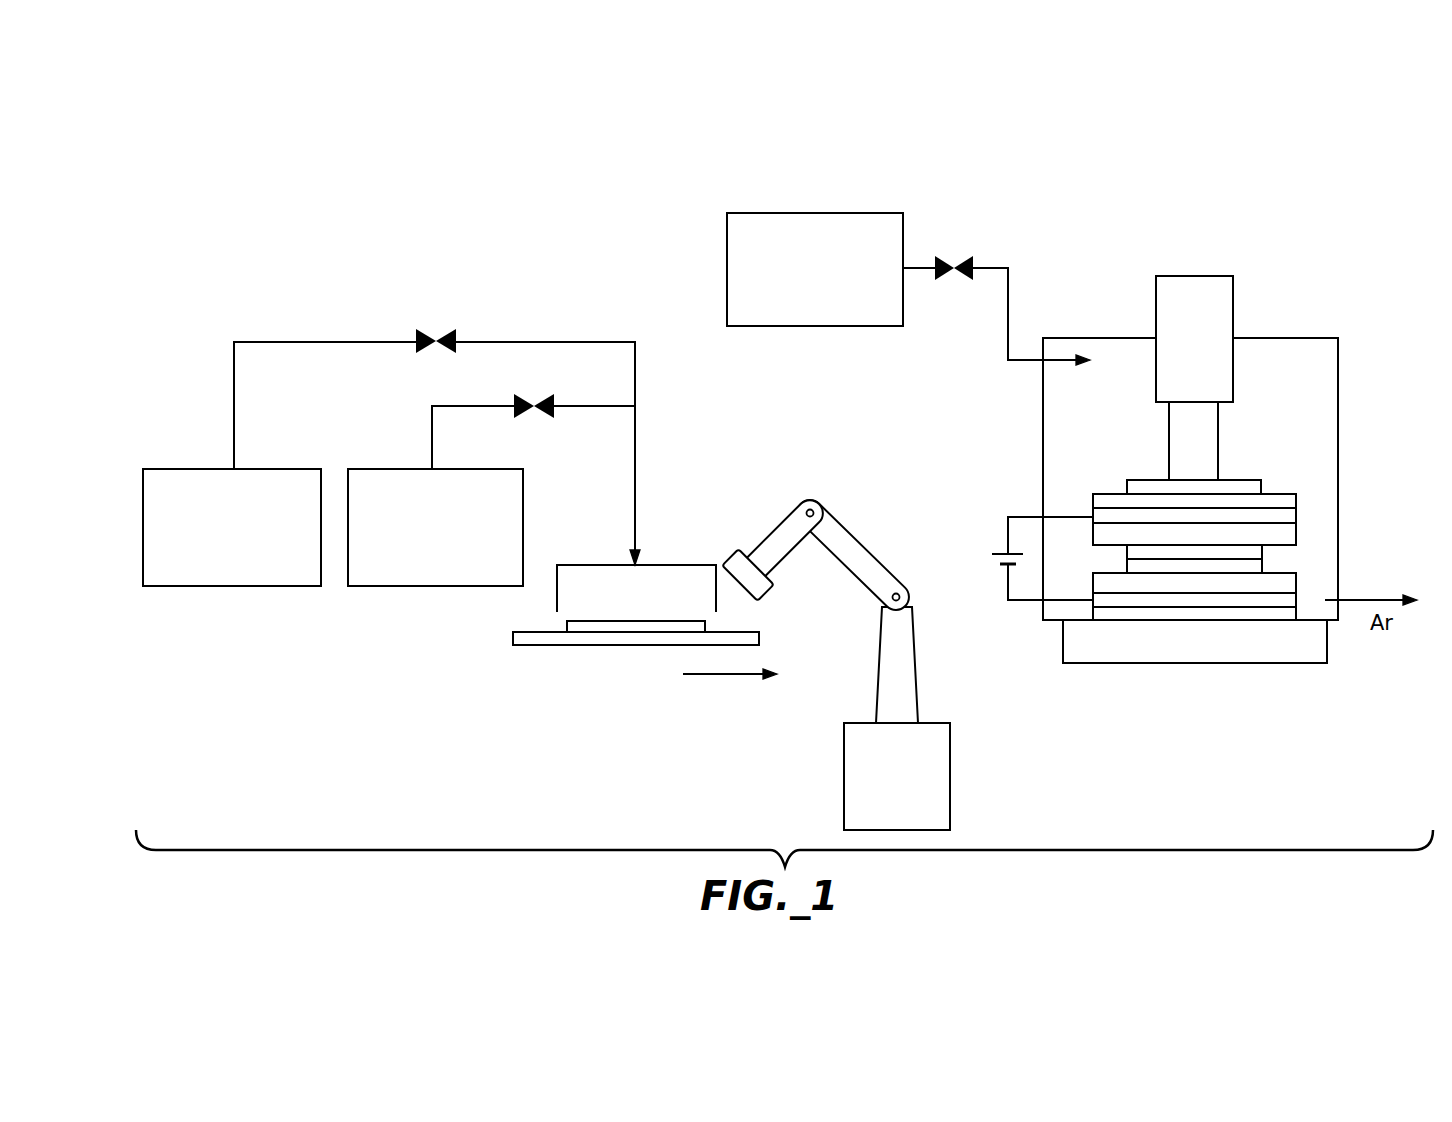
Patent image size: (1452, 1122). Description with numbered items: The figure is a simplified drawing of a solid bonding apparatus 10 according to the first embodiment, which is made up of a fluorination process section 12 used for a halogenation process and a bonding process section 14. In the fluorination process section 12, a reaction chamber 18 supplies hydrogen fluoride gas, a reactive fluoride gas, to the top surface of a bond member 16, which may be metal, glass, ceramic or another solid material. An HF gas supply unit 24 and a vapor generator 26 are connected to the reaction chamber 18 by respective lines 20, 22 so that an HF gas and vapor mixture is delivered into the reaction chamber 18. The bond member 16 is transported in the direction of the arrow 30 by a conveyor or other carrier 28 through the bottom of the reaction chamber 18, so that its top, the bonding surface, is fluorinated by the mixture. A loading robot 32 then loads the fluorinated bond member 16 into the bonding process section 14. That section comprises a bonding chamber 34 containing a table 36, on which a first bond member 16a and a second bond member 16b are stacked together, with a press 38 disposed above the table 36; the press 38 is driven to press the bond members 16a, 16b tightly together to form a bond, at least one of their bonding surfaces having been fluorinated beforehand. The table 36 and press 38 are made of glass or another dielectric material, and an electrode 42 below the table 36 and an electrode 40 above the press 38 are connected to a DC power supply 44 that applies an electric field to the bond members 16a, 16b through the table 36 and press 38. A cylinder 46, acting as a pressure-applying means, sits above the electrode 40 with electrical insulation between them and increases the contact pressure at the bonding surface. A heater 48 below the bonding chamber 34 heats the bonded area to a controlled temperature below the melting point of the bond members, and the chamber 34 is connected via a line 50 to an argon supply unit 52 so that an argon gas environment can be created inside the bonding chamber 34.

The bonding apparatus 10 is at (650, 260).
The fluorination process section 12 is at (677, 518).
The bonding process section 14 is at (1115, 283).
The bond member 16 is at (567, 628).
The first bond member 16a is at (1255, 553).
The second bond member 16b is at (1255, 566).
The reaction chamber 18 is at (602, 578).
The line 20 is at (385, 340).
The line 22 is at (440, 405).
The HF gas supply unit 24 is at (221, 467).
The vapor generator 26 is at (415, 465).
The carrier 28 is at (610, 647).
The arrow 30 is at (740, 677).
The loading robot 32 is at (862, 735).
The bonding chamber 34 is at (1258, 338).
The table 36 is at (1297, 580).
The press 38 is at (1115, 535).
The electrode 40 is at (1285, 515).
The electrode 42 is at (1285, 600).
The DC power supply 44 is at (998, 561).
The cylinder 46 is at (1168, 275).
The heater 48 is at (1125, 655).
The line 50 is at (1003, 303).
The argon supply unit 52 is at (832, 211).